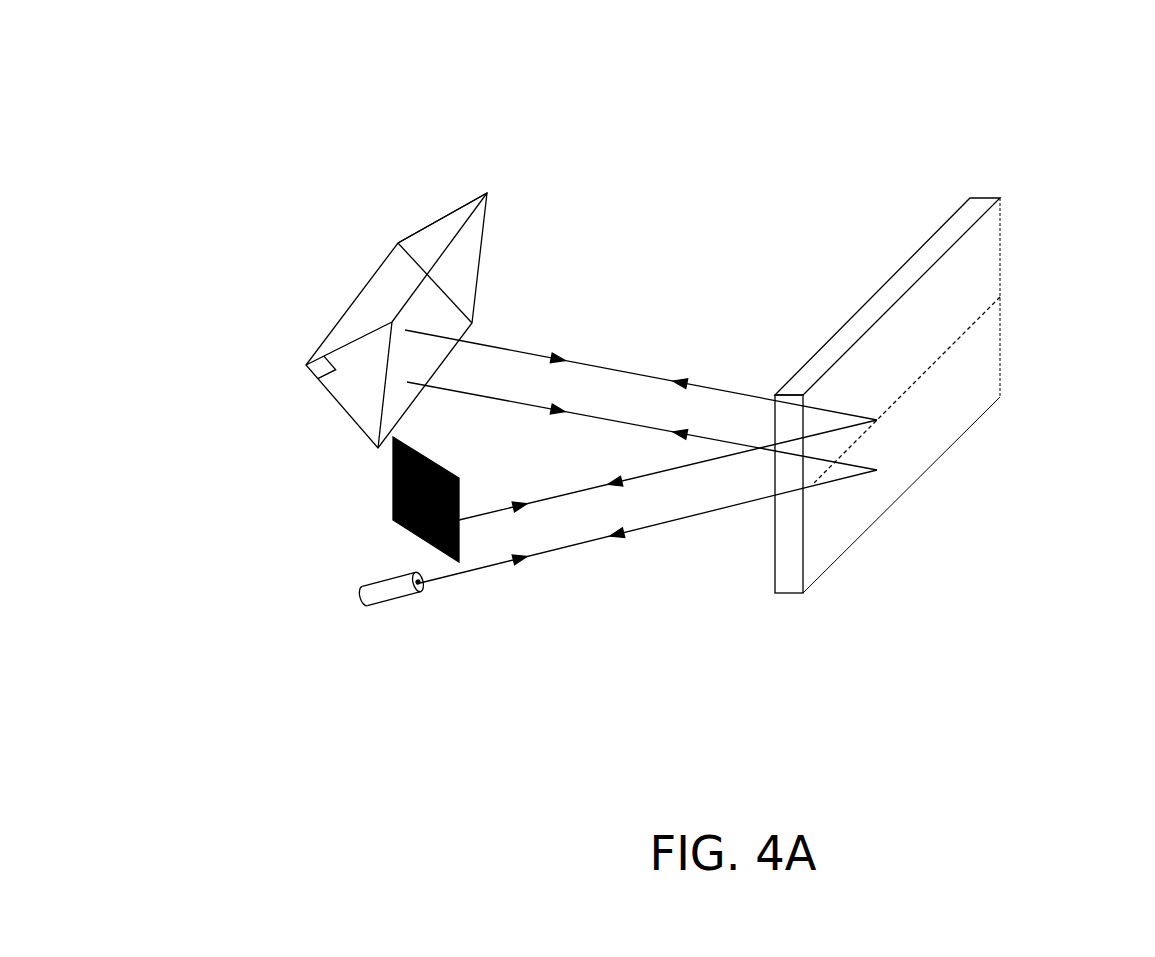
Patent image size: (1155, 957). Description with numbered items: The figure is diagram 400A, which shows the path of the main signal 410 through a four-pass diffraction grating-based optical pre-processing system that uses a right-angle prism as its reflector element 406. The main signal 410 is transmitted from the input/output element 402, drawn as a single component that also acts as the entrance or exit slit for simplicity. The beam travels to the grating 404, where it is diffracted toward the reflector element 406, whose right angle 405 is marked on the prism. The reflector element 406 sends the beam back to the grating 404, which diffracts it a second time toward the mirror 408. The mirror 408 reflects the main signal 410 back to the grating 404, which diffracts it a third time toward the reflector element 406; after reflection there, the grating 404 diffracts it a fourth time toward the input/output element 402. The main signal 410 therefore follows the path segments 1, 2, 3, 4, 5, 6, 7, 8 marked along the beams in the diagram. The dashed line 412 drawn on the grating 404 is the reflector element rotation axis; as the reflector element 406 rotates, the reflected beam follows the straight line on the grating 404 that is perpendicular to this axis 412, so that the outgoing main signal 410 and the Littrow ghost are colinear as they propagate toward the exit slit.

The diagram 400A is at (270, 76).
The input/output element 402 is at (363, 597).
The grating 404 is at (998, 217).
The right angle 405 is at (306, 367).
The reflector element 406 is at (491, 195).
The mirror 408 is at (395, 518).
The main signal 410 is at (698, 513).
The reflector element rotation axis 412 is at (985, 313).
The path segment 1 is at (508, 578).
The path segment 2 is at (697, 418).
The path segment 3 is at (641, 367).
The path segment 4 is at (629, 461).
The path segment 5 is at (668, 470).
The path segment 6 is at (697, 368).
The path segment 7 is at (642, 417).
The path segment 8 is at (640, 545).